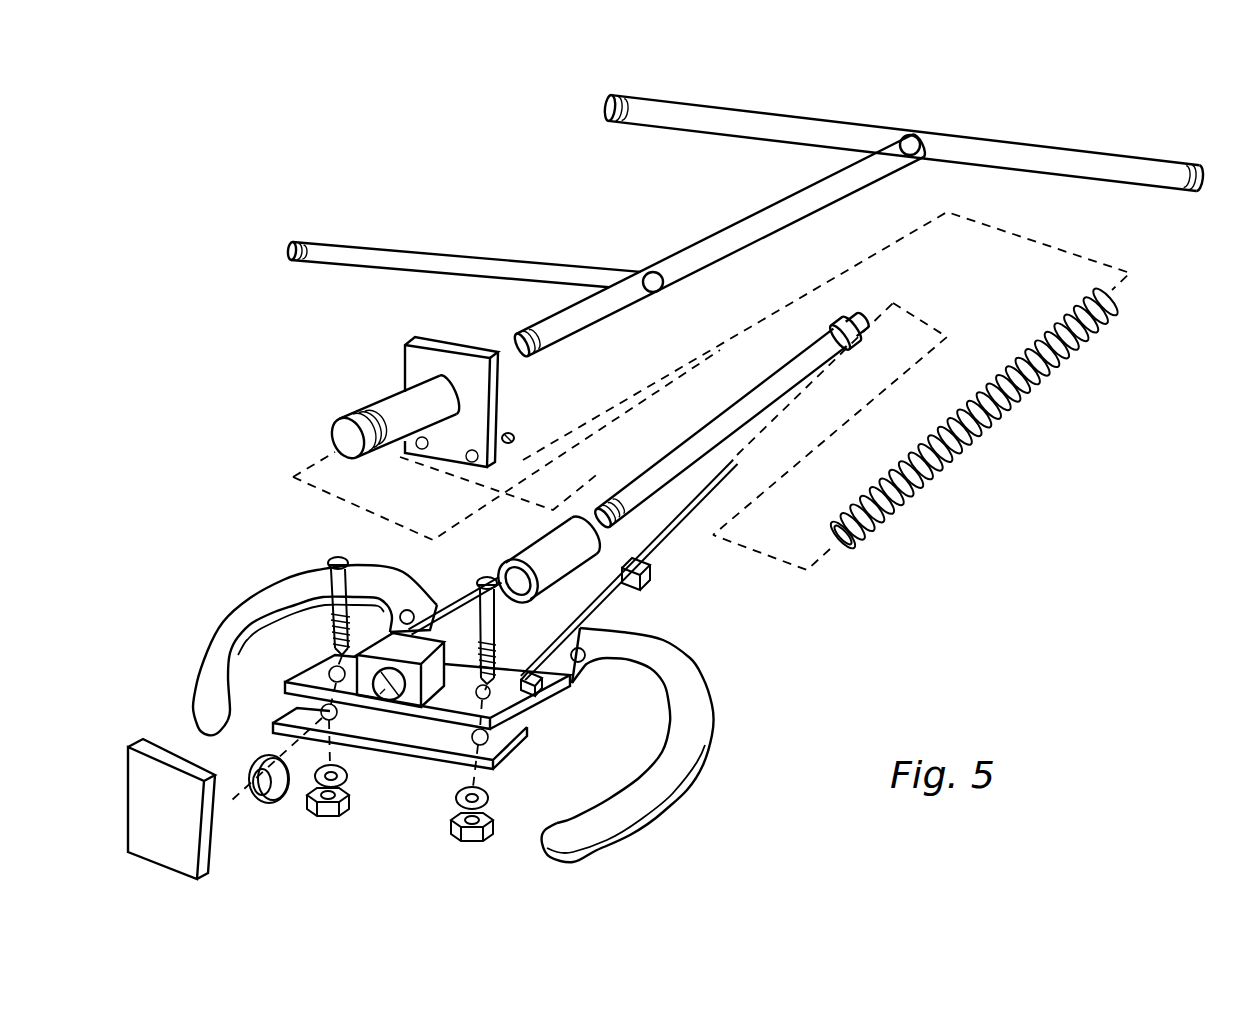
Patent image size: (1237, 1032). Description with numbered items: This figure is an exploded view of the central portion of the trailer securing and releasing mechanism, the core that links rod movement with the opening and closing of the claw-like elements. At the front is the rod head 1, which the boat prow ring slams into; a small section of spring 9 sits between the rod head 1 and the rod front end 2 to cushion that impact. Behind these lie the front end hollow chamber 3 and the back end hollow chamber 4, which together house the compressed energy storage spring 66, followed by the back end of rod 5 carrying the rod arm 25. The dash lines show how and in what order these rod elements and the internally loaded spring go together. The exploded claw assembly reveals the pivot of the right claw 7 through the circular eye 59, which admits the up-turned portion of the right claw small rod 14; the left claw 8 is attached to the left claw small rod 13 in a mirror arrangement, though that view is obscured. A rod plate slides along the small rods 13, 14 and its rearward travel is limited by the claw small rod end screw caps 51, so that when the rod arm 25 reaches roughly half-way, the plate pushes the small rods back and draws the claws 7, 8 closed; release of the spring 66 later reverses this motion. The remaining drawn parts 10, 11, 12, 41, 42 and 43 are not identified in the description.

The rod head 1 is at (157, 885).
The rod front end 2 is at (833, 371).
The front end hollow chamber 3 is at (510, 535).
The back end hollow chamber 4 is at (348, 388).
The back end of rod 5 is at (710, 210).
The right claw-like element 7 is at (732, 737).
The left claw-like element 8 is at (200, 613).
The spring 9 is at (251, 824).
The base plate 10 is at (401, 781).
The screw 11 is at (305, 551).
The screw 12 is at (507, 623).
The left claw small rod 13 is at (457, 590).
The right claw small rod 14 is at (685, 554).
The rod arm 25 is at (406, 225).
The nut 41 is at (311, 824).
The nut 42 is at (459, 849).
The top bar 43 is at (1017, 116).
The claw small rod end screw caps 51 is at (533, 423).
The circular eye 59 is at (545, 713).
The energy storage spring 66 is at (1029, 422).